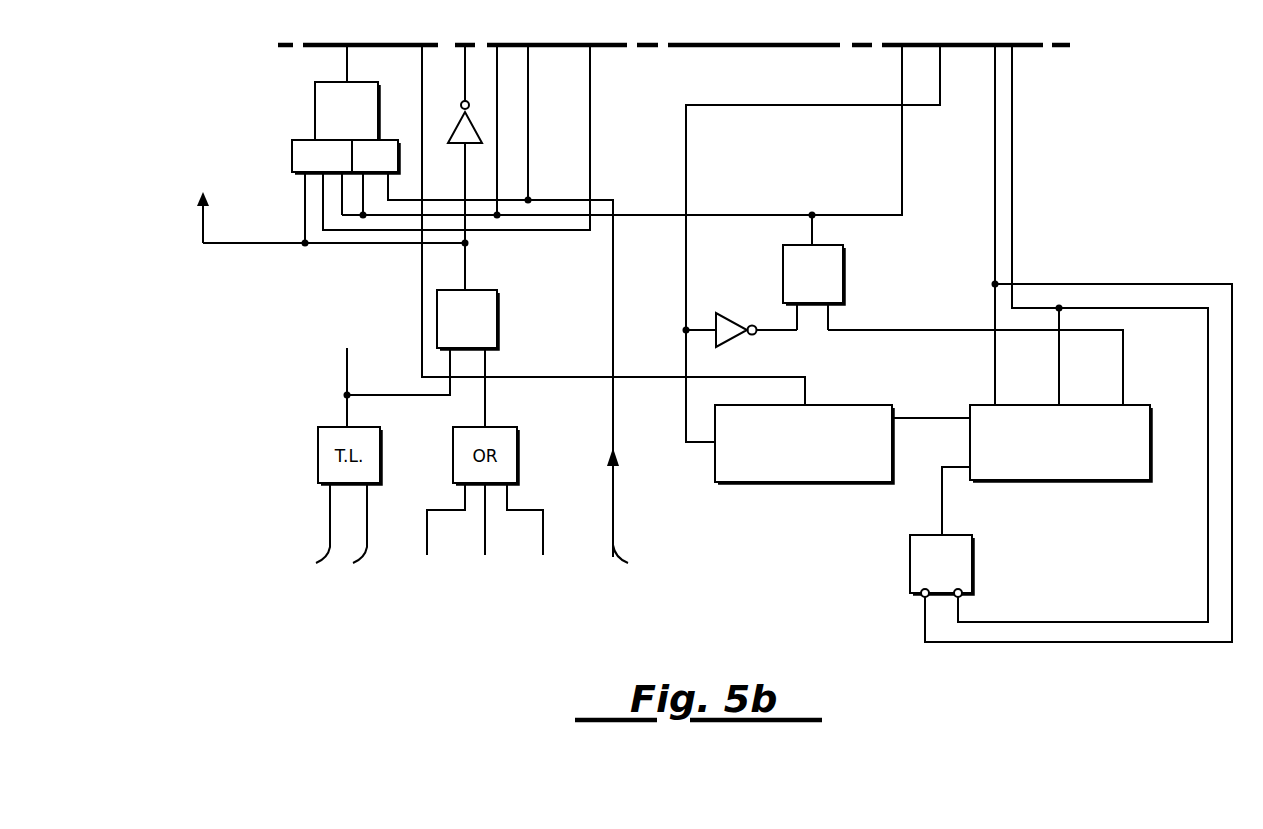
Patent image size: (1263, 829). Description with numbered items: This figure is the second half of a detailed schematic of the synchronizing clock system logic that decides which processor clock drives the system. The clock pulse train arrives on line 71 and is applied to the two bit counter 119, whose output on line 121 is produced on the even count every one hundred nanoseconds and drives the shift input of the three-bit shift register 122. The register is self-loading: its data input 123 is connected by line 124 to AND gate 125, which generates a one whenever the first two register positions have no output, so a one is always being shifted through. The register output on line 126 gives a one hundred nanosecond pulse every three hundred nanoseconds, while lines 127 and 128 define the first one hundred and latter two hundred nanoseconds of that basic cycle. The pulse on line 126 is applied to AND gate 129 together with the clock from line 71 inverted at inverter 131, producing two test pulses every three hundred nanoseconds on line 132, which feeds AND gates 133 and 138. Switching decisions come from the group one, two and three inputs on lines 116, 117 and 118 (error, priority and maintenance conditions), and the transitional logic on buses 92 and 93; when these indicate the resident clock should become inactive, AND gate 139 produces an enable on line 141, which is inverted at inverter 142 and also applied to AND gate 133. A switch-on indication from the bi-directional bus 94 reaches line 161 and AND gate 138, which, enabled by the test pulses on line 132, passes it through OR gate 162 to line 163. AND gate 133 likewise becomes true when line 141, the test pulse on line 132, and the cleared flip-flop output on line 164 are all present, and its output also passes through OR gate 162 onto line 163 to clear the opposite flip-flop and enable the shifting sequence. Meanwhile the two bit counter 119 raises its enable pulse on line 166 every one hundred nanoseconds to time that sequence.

The line 71 is at (940, 67).
The bus 92 is at (336, 537).
The bus 93 is at (347, 363).
The bus 94 is at (203, 222).
The line 116 is at (543, 535).
The line 117 is at (485, 535).
The line 118 is at (427, 535).
The two bit counter 119 is at (838, 405).
The line 121 is at (920, 417).
The three-bit shift register 122 is at (1112, 481).
The data input 123 is at (980, 481).
The line 124 is at (940, 509).
The AND gate 125 is at (972, 560).
The line 126 is at (1123, 362).
The line 127 is at (995, 362).
The line 128 is at (1059, 362).
The AND gate 129 is at (843, 263).
The inverter 131 is at (720, 312).
The line 132 is at (902, 65).
The AND gate 133 is at (292, 158).
The AND gate 138 is at (390, 140).
The AND gate 139 is at (497, 307).
The line 141 is at (467, 257).
The inverter 142 is at (452, 145).
The line 161 is at (613, 283).
The OR gate 162 is at (353, 81).
The line 163 is at (347, 65).
The line 164 is at (590, 65).
The line 166 is at (757, 377).